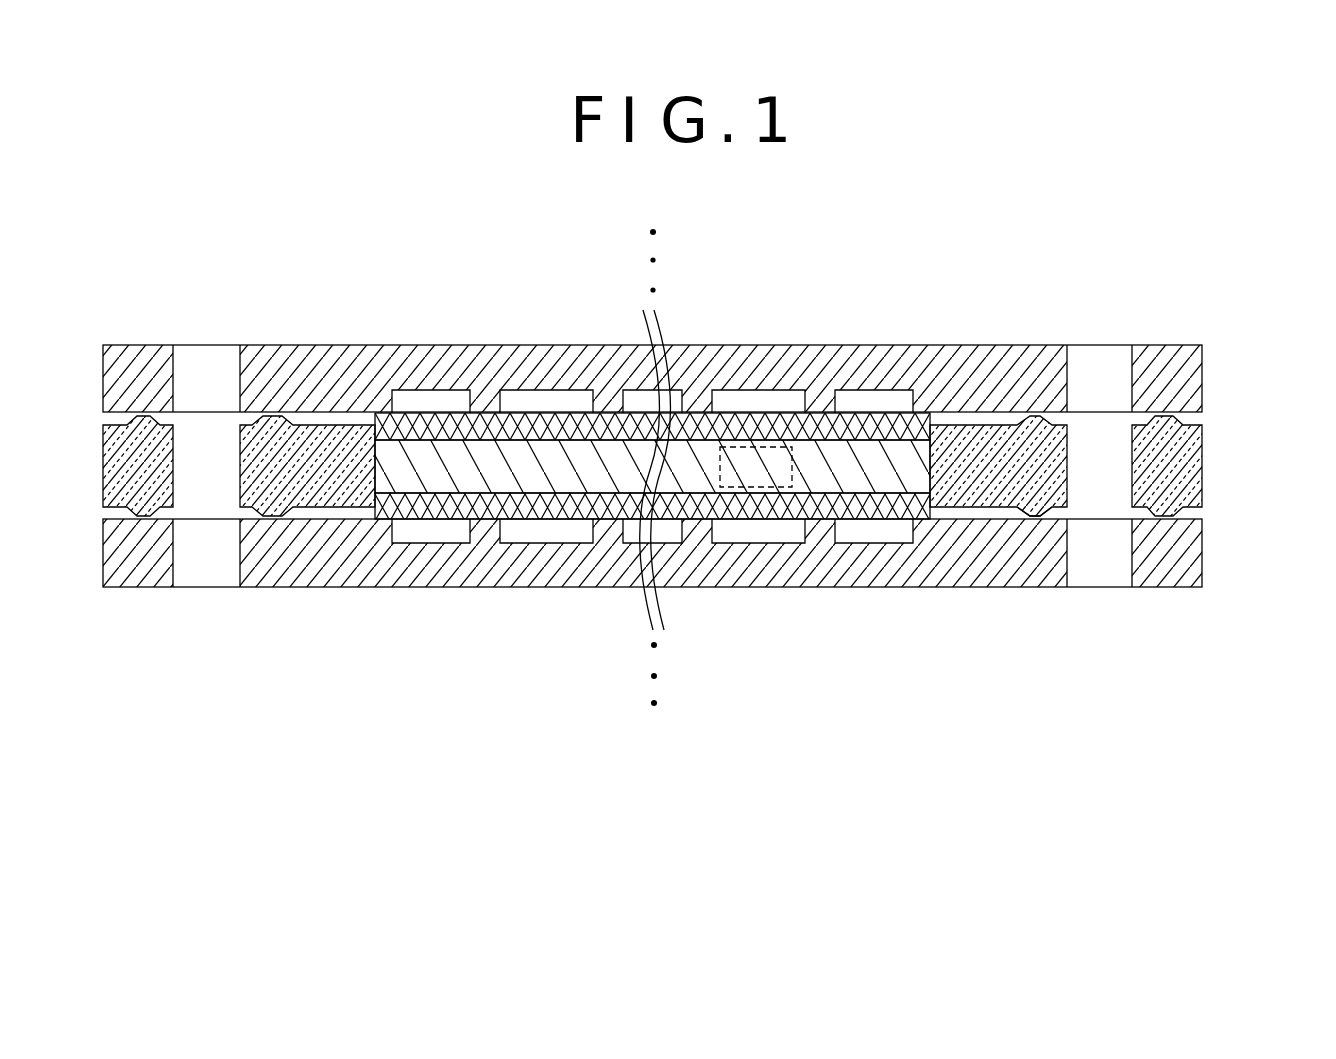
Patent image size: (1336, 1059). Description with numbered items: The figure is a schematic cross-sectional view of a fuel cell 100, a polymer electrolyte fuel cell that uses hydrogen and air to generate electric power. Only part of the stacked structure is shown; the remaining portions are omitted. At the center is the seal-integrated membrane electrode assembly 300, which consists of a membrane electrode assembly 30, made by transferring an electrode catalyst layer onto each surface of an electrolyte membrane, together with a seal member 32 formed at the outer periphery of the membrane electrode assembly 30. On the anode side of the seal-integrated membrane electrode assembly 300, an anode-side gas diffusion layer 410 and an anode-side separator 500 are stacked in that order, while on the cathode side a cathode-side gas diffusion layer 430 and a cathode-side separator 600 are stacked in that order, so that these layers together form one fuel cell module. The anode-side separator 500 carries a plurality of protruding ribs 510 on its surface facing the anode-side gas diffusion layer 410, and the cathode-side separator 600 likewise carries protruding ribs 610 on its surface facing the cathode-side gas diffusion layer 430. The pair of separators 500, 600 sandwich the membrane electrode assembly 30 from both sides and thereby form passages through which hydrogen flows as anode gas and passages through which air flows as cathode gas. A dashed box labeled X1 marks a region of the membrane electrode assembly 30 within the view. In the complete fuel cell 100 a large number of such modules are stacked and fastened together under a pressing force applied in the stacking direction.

The fuel cell 100 is at (1209, 280).
The cathode-side separator 600 is at (1202, 382).
The protruding ribs 610 is at (502, 401).
The anode-side separator 500 is at (1202, 553).
The protruding ribs 510 is at (593, 528).
The seal-integrated membrane electrode assembly 300 is at (1202, 472).
The seal member 32 is at (1003, 490).
The cathode-side gas diffusion layer 430 is at (483, 425).
The anode-side gas diffusion layer 410 is at (847, 506).
The membrane electrode assembly 30 is at (707, 476).
The enlarged region X1 is at (736, 447).